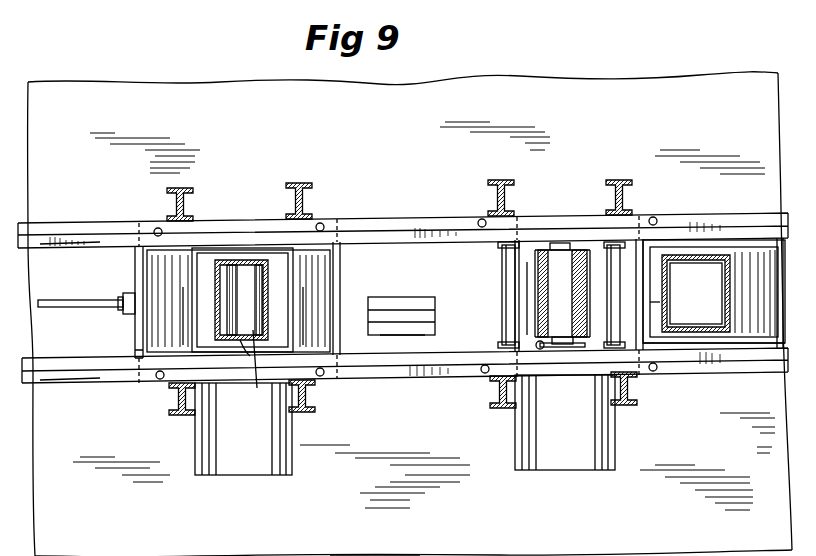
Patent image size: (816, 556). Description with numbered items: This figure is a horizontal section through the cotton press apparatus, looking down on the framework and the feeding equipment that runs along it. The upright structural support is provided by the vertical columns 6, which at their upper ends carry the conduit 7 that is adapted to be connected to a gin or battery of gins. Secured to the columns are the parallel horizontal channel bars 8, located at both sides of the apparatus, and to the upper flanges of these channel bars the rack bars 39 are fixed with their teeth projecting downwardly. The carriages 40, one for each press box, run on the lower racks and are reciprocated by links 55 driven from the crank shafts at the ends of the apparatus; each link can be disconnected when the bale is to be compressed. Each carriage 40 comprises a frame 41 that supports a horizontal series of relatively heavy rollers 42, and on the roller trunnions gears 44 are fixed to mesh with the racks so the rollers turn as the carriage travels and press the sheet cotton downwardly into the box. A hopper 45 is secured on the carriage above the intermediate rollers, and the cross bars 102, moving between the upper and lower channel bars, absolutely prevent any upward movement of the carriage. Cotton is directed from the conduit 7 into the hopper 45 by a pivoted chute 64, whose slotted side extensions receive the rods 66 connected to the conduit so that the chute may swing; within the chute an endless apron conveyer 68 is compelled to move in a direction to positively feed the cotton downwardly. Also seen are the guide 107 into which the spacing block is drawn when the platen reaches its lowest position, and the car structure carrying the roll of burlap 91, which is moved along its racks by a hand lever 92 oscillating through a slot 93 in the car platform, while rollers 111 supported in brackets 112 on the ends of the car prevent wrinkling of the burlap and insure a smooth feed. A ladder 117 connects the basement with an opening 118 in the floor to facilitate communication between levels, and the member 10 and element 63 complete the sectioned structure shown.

The vertical column 6 is at (180, 188).
The conduit 7 is at (375, 522).
The channel bar 8 is at (74, 234).
The frame bar 10 is at (662, 346).
The rack bar 39 is at (70, 248).
The carriage 40 is at (142, 342).
The frame 41 is at (183, 287).
The roller 42 is at (303, 287).
The gear 44 is at (142, 378).
The hopper 45 is at (195, 258).
The link 55 is at (60, 307).
The armature core 63 is at (532, 322).
The pivoted chute 64 is at (700, 252).
The rod 66 is at (251, 268).
The endless apron conveyer 68 is at (714, 292).
The roll of burlap 91 is at (527, 276).
The hand lever 92 is at (543, 350).
The slot 93 is at (580, 350).
The cross bar 102 is at (137, 226).
The guide 107 is at (250, 455).
The roller 111 is at (503, 300).
The bracket 112 is at (500, 246).
The ladder 117 is at (405, 337).
The opening 118 is at (405, 297).